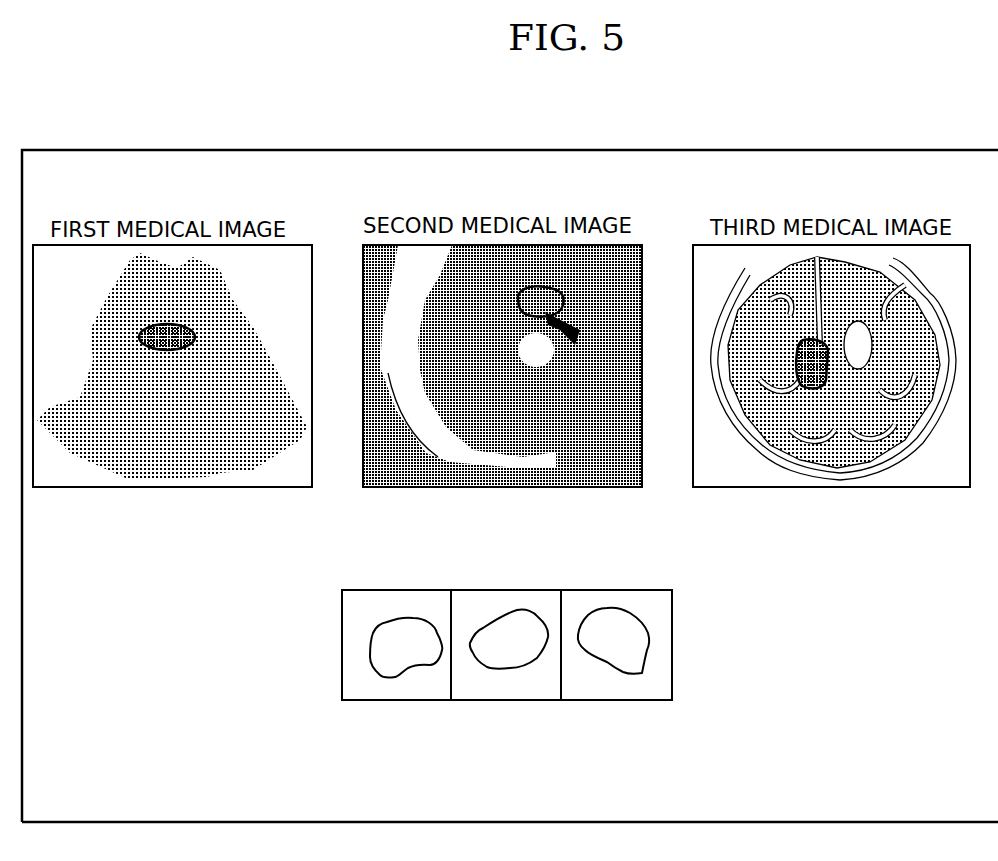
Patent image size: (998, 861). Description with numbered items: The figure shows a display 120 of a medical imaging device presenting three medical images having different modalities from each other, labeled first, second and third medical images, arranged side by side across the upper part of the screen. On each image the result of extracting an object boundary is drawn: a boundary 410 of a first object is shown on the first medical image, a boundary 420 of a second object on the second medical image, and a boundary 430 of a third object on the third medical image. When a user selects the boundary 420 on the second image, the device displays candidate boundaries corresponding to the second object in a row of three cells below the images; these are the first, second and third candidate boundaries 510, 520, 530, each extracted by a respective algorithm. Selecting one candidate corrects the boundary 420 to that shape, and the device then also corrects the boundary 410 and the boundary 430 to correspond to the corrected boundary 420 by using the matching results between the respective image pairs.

The display 120 is at (920, 150).
The boundary of first object 410 is at (185, 348).
The boundary of second object 420 is at (562, 290).
The boundary of third object 430 is at (817, 390).
The first candidate boundary 510 is at (413, 618).
The second candidate boundary 520 is at (532, 605).
The third candidate boundary 530 is at (628, 612).